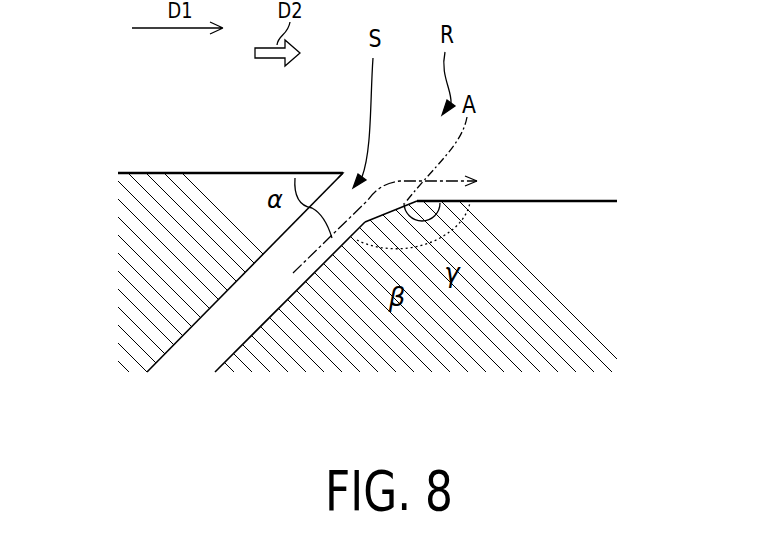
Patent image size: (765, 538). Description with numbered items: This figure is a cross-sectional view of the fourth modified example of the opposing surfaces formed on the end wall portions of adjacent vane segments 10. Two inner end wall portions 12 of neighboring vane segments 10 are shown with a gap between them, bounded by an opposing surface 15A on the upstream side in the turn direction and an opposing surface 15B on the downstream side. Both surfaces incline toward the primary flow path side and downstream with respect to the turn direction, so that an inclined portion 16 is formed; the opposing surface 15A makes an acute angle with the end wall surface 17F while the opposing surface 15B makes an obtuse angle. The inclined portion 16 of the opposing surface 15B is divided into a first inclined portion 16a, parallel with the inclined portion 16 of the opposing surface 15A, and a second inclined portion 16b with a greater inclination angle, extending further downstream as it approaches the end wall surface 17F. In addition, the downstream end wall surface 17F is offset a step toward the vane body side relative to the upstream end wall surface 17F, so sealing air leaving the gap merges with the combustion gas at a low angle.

The vane segment 10 is at (356, 244).
The inner end wall portion 12 is at (370, 135).
The opposing surface 15A is at (352, 175).
The opposing surface 15B is at (372, 216).
The inclined portion 16 is at (281, 254).
The first inclined portion 16a is at (297, 173).
The second inclined portion 16b is at (405, 203).
The end wall surface 17F is at (135, 173).